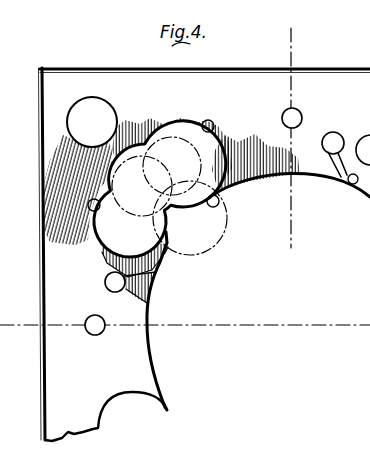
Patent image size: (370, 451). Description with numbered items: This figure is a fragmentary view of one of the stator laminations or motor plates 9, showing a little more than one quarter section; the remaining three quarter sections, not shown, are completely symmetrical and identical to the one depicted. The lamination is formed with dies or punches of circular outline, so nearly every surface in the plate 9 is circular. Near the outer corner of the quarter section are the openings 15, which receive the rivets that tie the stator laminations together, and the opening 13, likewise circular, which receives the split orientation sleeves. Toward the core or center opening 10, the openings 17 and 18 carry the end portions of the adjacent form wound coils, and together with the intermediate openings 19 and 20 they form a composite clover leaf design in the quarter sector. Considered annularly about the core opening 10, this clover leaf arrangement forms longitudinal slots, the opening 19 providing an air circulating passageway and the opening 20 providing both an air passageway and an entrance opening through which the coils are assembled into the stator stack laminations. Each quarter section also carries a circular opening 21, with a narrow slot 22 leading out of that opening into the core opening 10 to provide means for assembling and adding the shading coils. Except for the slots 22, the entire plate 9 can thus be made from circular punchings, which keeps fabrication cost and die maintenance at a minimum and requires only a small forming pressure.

The stator lamination or plate 9 is at (55, 143).
The core opening 10 is at (312, 178).
The opening 13 is at (118, 104).
The opening 15 is at (284, 110).
The opening 17 is at (92, 212).
The opening 18 is at (216, 132).
The intermediate opening 19 is at (110, 173).
The intermediate opening 20 is at (218, 206).
The circular opening 21 is at (146, 301).
The narrow slot 22 is at (154, 275).